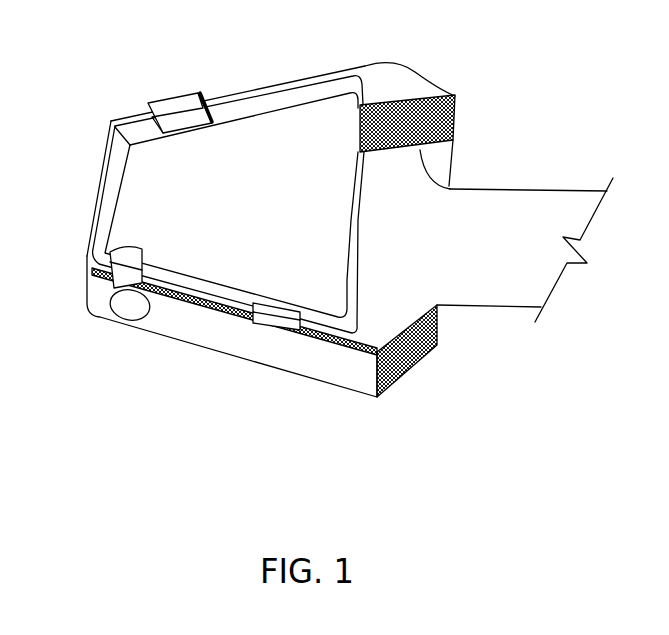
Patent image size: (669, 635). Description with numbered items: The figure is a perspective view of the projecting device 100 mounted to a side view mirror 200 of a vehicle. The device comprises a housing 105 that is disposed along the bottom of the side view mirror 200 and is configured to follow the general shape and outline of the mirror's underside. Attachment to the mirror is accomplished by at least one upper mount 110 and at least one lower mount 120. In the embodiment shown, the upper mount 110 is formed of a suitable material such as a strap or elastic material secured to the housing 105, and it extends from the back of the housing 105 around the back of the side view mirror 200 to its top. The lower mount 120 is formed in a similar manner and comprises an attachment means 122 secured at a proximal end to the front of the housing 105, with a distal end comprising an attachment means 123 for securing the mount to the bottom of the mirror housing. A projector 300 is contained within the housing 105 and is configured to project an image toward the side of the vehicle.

The projecting device 100 is at (352, 404).
The housing 105 is at (300, 364).
The upper mount 110 is at (196, 93).
The lower mount 120 is at (298, 307).
The attachment means 122 is at (277, 333).
The attachment means 123 is at (110, 250).
The side view mirror 200 is at (558, 191).
The projector 300 is at (121, 307).